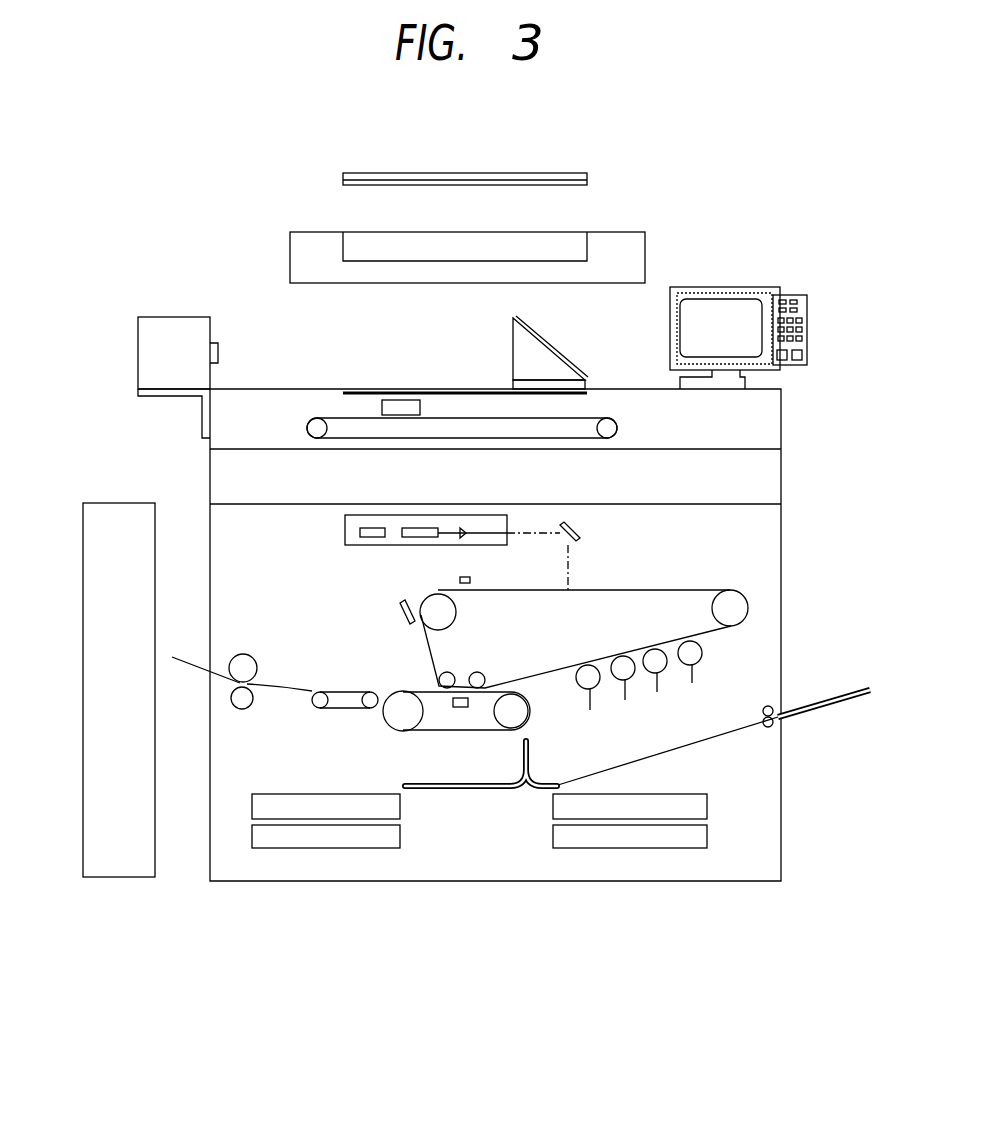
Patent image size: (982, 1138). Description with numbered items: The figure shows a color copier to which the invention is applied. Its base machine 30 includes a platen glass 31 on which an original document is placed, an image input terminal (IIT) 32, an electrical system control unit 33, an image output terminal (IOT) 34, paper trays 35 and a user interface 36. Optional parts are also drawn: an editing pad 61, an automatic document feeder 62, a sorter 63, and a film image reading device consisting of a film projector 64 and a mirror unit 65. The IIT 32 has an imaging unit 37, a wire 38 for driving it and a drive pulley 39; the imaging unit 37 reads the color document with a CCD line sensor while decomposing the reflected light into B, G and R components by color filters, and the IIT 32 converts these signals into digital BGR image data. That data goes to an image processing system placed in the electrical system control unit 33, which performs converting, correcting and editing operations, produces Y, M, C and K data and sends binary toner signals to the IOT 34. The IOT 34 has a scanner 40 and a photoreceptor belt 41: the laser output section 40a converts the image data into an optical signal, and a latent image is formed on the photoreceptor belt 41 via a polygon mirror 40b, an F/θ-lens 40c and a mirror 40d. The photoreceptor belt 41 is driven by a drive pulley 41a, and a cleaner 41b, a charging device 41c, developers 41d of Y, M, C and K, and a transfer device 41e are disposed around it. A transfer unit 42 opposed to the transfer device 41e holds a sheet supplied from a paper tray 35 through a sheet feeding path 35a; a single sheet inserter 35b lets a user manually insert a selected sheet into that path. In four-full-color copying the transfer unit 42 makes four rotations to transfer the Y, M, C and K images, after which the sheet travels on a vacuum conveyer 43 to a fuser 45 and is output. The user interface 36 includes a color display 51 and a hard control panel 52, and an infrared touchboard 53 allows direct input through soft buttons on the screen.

The base machine 30 is at (331, 884).
The platen glass 31 is at (436, 391).
The image input terminal (IIT) 32 is at (752, 424).
The electrical system control unit 33 is at (742, 484).
The image output terminal (IOT) 34 is at (712, 577).
The paper trays 35 is at (417, 816).
The sheet feeding path 35a is at (529, 760).
The single sheet inserter (SSI) 35b is at (824, 704).
The user interface (U/I) 36 is at (766, 300).
The imaging unit 37 is at (398, 400).
The wire 38 is at (338, 417).
The drive pulley 39 is at (607, 418).
The scanner 40 is at (343, 528).
The laser output section 40a is at (367, 543).
The polygon mirror 40b is at (410, 543).
The F/θ-lens 40c is at (466, 543).
The mirror 40d is at (581, 531).
The photoreceptor belt 41 is at (615, 590).
The drive pulley 41a is at (447, 616).
The cleaner 41b is at (400, 614).
The charging device 41c is at (470, 582).
The developers 41d is at (707, 700).
The transfer device 41e is at (460, 708).
The transfer unit 42 is at (431, 734).
The vacuum conveyer 43 is at (327, 710).
The fuser 45 is at (242, 652).
The color display 51 is at (748, 303).
The hard control panel 52 is at (808, 318).
The infrared touchboard 53 is at (685, 288).
The editing pad 61 is at (568, 172).
The automatic document feeder (ADF) 62 is at (632, 232).
The sorter 63 is at (98, 768).
The film projector (F/P) 64 is at (191, 317).
The mirror unit (M/U) 65 is at (541, 357).